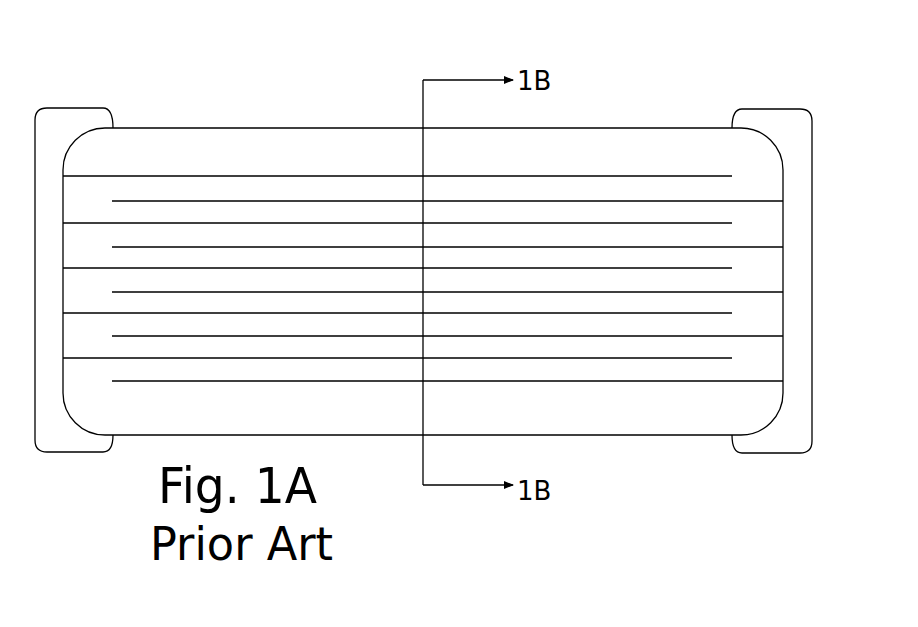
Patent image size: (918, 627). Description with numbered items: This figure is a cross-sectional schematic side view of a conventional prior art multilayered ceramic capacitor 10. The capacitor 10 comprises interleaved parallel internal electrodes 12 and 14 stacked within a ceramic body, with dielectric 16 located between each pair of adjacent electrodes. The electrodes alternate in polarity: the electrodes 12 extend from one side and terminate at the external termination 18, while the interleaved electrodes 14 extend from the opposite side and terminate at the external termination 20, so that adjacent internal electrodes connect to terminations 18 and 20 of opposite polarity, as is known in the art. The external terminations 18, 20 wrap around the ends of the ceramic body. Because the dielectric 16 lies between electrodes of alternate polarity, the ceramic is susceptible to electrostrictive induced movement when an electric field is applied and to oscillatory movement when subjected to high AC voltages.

The multilayered ceramic capacitor 10 is at (423, 273).
The internal electrode 12 is at (315, 267).
The internal electrode 14 is at (648, 292).
The dielectric 16 is at (102, 248).
The external termination 18 is at (57, 430).
The external termination 20 is at (795, 428).